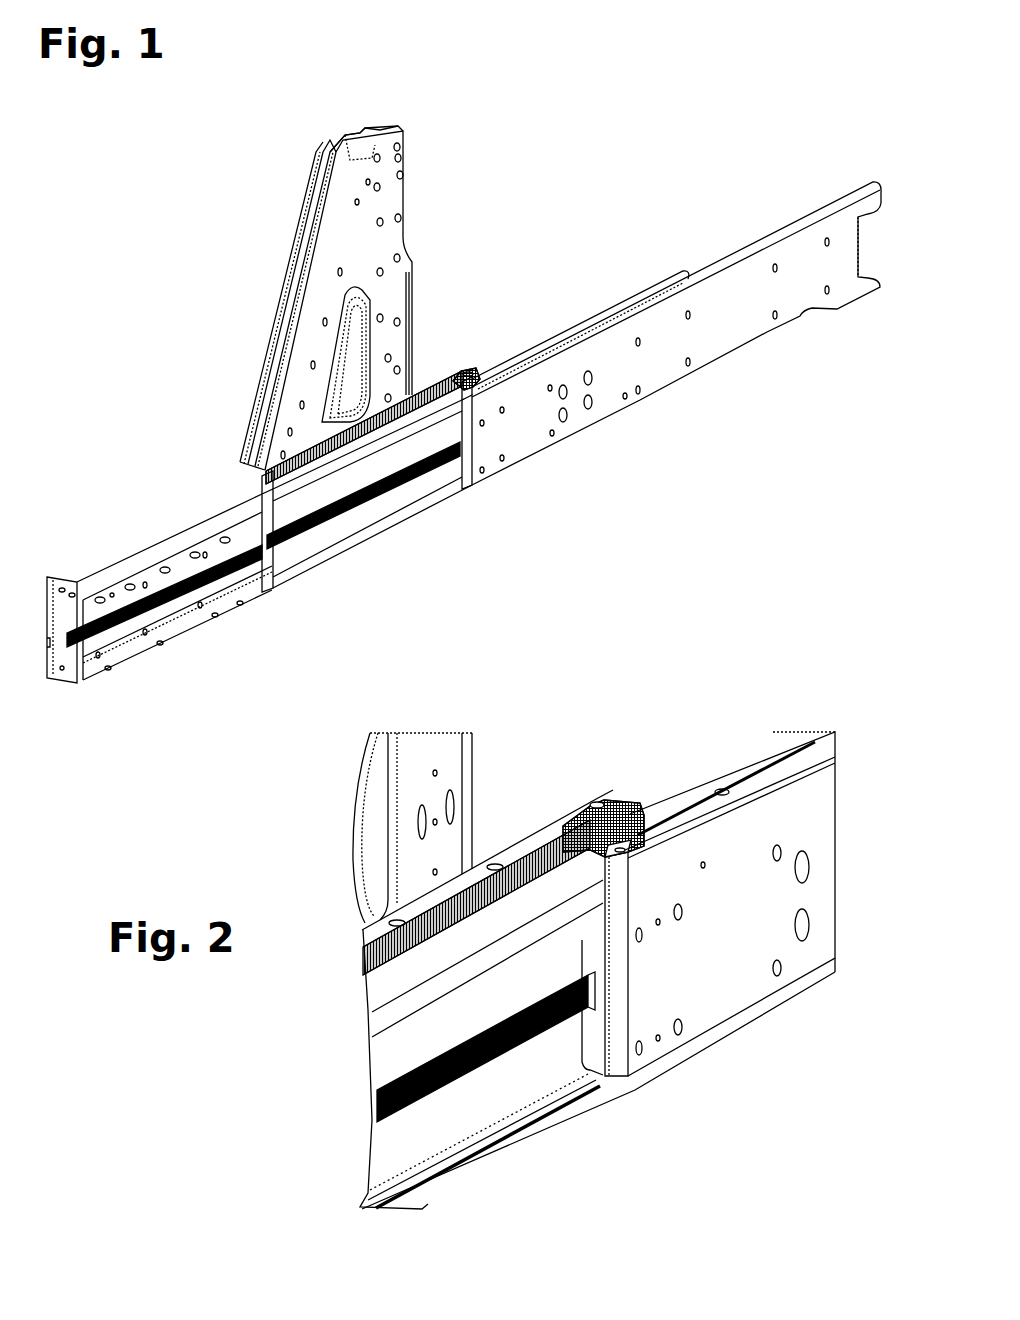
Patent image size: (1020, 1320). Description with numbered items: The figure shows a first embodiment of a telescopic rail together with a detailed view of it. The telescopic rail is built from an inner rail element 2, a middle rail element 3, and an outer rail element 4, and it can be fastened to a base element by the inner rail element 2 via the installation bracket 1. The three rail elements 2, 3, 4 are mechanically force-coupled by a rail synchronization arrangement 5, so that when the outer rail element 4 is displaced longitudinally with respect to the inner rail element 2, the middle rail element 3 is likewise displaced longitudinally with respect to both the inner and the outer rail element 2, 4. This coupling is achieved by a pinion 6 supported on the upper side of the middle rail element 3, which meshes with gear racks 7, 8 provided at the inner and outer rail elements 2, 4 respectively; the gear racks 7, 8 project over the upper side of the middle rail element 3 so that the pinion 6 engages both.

In FIG. 1, the installation bracket 1 is at (259, 396).
In FIG. 1, the inner rail element 2 is at (80, 655).
In FIG. 1, the middle rail element 3 is at (283, 560).
In FIG. 1, the outer rail element 4 is at (530, 430).
In FIG. 1, the rail synchronization arrangement 5 is at (482, 355).
In FIG. 2, the rail synchronization arrangement 5 is at (677, 726).
In FIG. 2, the pinion 6 is at (604, 800).
In FIG. 2, the gear rack 7 is at (537, 842).
In FIG. 2, the gear rack 8 is at (812, 762).